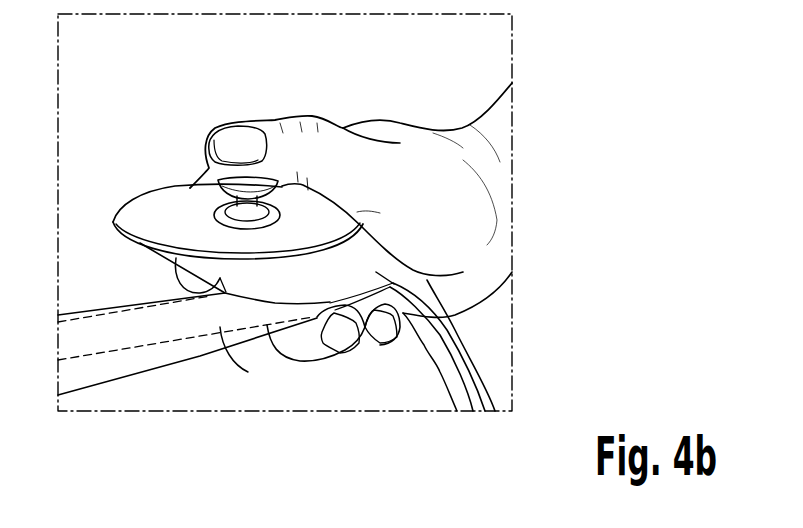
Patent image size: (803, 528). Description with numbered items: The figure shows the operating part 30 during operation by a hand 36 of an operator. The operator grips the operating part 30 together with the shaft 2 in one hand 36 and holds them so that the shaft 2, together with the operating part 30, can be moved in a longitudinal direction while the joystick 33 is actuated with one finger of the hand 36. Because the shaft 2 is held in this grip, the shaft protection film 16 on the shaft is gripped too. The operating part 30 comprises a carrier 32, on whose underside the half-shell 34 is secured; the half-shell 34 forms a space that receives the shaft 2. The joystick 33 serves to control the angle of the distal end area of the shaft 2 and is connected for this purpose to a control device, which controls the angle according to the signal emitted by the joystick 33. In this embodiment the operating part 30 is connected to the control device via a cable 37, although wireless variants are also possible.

The shaft 2 is at (125, 327).
The shaft protection film 16 is at (175, 350).
The operating part 30 is at (184, 107).
The carrier 32 is at (148, 210).
The joystick 33 is at (255, 190).
The half-shell 34 is at (406, 315).
The hand 36 is at (416, 143).
The cable 37 is at (467, 343).